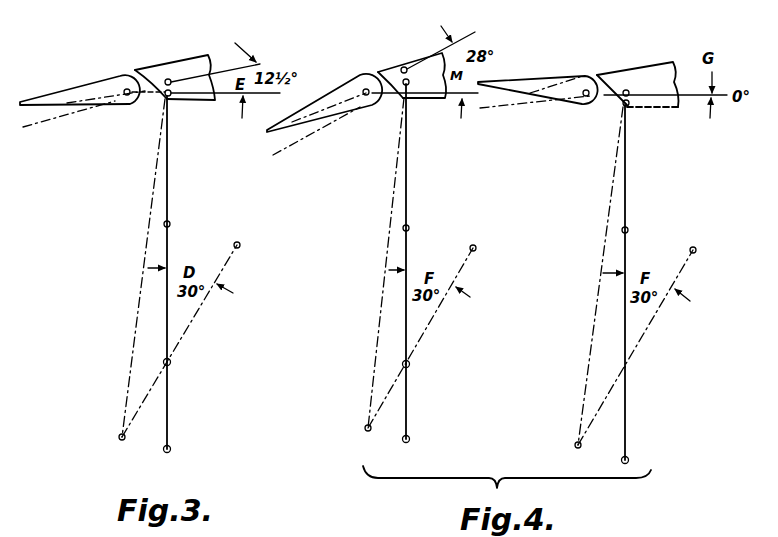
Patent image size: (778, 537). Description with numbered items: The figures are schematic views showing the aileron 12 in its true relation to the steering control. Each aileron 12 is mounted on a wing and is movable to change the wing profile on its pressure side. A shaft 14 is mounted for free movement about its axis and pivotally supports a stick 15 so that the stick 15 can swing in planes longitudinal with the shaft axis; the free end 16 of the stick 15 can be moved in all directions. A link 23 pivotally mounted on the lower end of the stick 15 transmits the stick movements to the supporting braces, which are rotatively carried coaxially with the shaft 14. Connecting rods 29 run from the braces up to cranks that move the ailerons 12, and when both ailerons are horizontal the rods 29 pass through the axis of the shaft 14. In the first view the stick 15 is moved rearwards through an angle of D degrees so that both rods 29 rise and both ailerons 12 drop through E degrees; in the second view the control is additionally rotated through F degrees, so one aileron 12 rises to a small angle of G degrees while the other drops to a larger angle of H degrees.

In FIG. 3, the aileron 12 is at (62, 92).
In FIG. 4, the aileron 12 is at (313, 102).
In FIG. 3, the shaft 14 is at (171, 362).
In FIG. 4, the shaft 14 is at (410, 362).
In FIG. 3, the stick 15 is at (168, 418).
In FIG. 4, the stick 15 is at (407, 416).
In FIG. 3, the free end 16 is at (167, 452).
In FIG. 3, the link 23 is at (138, 328).
In FIG. 3, the connecting rod 29 is at (167, 200).
In FIG. 4, the connecting rod 29 is at (406, 200).